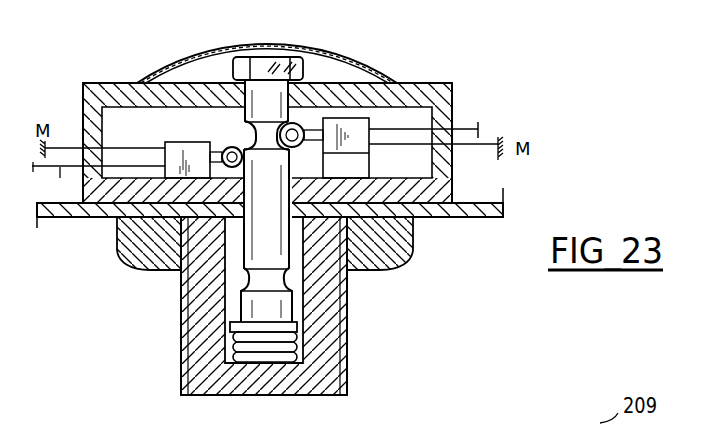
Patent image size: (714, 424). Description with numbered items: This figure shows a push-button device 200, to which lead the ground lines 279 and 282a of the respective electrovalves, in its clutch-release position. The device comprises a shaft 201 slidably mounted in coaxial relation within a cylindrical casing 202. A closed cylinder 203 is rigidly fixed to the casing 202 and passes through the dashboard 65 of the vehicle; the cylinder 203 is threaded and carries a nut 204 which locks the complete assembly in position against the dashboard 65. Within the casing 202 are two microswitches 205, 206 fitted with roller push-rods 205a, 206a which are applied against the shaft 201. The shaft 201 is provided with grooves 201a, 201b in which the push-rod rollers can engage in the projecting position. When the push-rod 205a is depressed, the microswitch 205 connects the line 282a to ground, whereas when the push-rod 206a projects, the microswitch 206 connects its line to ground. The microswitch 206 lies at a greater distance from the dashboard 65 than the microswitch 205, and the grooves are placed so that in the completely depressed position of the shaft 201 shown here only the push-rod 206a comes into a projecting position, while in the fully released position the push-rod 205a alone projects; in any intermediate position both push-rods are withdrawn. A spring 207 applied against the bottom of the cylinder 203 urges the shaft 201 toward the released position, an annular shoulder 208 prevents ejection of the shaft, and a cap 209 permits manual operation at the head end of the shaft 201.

The push-button device 200 is at (143, 350).
The shaft 201 is at (243, 112).
The groove 201a is at (272, 132).
The groove 201b is at (246, 278).
The cylindrical casing 202 is at (422, 91).
The closed cylinder 203 is at (212, 372).
The nut 204 is at (388, 248).
The microswitch 205 is at (161, 144).
The roller push-rod 205a is at (230, 154).
The microswitch 206 is at (373, 153).
The roller push-rod 206a is at (312, 130).
The spring 207 is at (275, 362).
The annular shoulder 208 is at (303, 325).
The cap 209 is at (195, 56).
The ground line 279 is at (478, 125).
The ground line 282a is at (55, 181).
The dashboard 65 is at (477, 218).